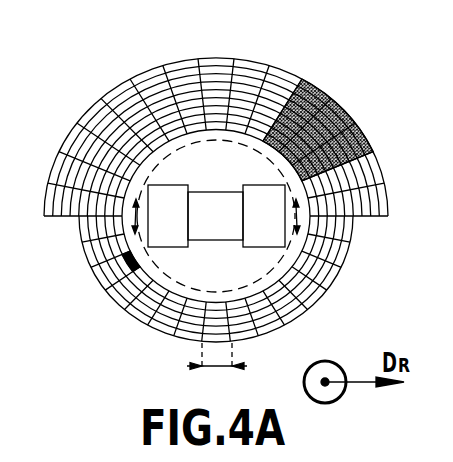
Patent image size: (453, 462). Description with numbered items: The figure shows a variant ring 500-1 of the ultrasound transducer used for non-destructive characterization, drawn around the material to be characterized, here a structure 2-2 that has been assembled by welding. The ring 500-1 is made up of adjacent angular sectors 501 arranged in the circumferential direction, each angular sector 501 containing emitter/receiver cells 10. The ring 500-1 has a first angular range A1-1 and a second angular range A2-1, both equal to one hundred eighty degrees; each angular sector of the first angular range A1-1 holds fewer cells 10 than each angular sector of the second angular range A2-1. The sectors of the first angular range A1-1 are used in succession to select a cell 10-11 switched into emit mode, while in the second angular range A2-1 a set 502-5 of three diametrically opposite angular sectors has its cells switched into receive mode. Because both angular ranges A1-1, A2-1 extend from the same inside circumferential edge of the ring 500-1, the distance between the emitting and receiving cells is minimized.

The ring 500-1 is at (111, 70).
The emitter/receiver cells 10 is at (376, 176).
The set of diametrically opposite angular sectors 502-5 is at (384, 143).
The cell switched into emit mode 10-11 is at (127, 262).
The second angular range A2-1 is at (217, 141).
The first angular range A1-1 is at (219, 291).
The structure assembled by welding 2-2 is at (236, 229).
The angular sector 501 is at (217, 369).